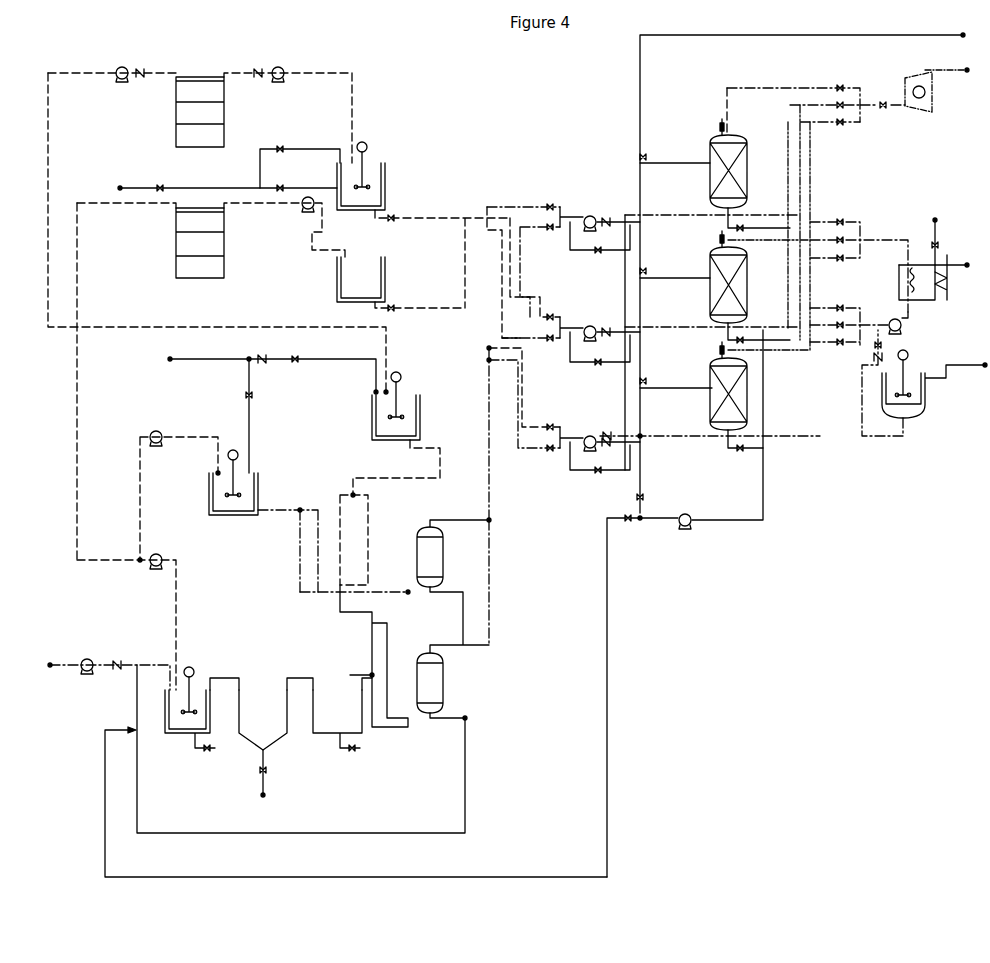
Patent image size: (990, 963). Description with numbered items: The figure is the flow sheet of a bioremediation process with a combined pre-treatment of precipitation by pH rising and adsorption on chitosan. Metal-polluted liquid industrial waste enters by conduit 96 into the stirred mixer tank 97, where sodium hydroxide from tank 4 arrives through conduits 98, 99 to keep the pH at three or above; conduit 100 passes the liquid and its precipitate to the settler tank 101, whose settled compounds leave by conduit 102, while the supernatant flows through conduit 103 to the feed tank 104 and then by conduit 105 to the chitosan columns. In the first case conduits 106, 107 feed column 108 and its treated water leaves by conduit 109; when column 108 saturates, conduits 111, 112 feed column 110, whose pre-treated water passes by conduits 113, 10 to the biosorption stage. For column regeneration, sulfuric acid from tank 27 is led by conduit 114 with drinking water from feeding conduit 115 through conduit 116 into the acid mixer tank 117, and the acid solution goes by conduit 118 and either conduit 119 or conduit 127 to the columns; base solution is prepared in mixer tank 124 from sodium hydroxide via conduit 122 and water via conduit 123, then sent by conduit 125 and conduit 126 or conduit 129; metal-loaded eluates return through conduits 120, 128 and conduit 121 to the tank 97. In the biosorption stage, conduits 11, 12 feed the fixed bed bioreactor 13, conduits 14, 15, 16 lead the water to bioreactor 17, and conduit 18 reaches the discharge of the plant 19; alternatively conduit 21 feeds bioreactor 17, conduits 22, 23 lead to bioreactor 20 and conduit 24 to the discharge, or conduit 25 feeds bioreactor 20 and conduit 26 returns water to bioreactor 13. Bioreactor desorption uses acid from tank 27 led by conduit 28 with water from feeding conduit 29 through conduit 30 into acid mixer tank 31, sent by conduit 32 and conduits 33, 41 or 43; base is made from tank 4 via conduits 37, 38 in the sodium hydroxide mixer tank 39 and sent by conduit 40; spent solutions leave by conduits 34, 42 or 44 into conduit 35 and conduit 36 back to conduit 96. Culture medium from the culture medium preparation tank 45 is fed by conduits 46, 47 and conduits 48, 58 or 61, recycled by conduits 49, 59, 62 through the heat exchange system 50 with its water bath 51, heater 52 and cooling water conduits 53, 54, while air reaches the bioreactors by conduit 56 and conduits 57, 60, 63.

The tank 4 is at (224, 256).
The conduit 10 is at (489, 488).
The conduit 11 is at (530, 230).
The conduit 12 is at (712, 215).
The fixed bed bioreactor 13 is at (712, 180).
The conduit 14 is at (690, 163).
The conduit 15 is at (568, 360).
The conduit 16 is at (712, 327).
The fixed bed bioreactor 17 is at (712, 292).
The conduit 18 is at (690, 278).
The discharge of the plant 19 is at (948, 35).
The fixed bed bioreactor 20 is at (712, 402).
The conduit 21 is at (540, 340).
The conduit 22 is at (570, 460).
The conduit 23 is at (712, 436).
The conduit 24 is at (690, 388).
The conduit 25 is at (540, 450).
The conduit 26 is at (572, 244).
The tank 27 is at (224, 124).
The conduit 28 is at (322, 73).
The feeding conduit 29 is at (132, 188).
The conduit 30 is at (314, 149).
The acid mixer tank 31 is at (385, 180).
The conduit 32 is at (465, 218).
The conduit 33 is at (522, 207).
The conduit 34 is at (750, 228).
The conduit 35 is at (763, 452).
The conduit 36 is at (312, 877).
The conduit 37 is at (270, 203).
The conduit 38 is at (352, 232).
The sodium hydroxide mixer tank 39 is at (385, 270).
The conduit 40 is at (445, 308).
The conduit 41 is at (538, 300).
The conduit 42 is at (756, 340).
The conduit 43 is at (494, 300).
The conduit 44 is at (750, 448).
The culture medium preparation tank 45 is at (882, 402).
The conduit 46 is at (862, 436).
The conduit 47 is at (870, 240).
The conduit 48 is at (810, 178).
The conduit 49 is at (780, 215).
The heat exchange system 50 is at (899, 292).
The water bath 51 is at (910, 312).
The heater 52 is at (955, 282).
The conduit 53 is at (935, 230).
The conduit 54 is at (955, 265).
The conduit 56 is at (883, 105).
The conduit 57 is at (766, 88).
The conduit 58 is at (780, 240).
The conduit 59 is at (780, 270).
The conduit 60 is at (790, 105).
The conduit 61 is at (783, 352).
The conduit 62 is at (785, 436).
The conduit 63 is at (845, 122).
The conduit 96 is at (58, 668).
The stirred mixer tank 97 is at (192, 733).
The conduit 98 is at (144, 203).
The conduit 99 is at (176, 578).
The conduit 100 is at (225, 678).
The settler tank 101 is at (242, 737).
The conduit 102 is at (263, 782).
The conduit 103 is at (305, 678).
The feed tank 104 is at (336, 733).
The conduit 105 is at (362, 678).
The conduit 106 is at (372, 665).
The conduit 107 is at (412, 593).
The column 108 is at (417, 560).
The conduit 109 is at (450, 522).
The column 110 is at (417, 680).
The conduit 111 is at (390, 728).
The conduit 112 is at (418, 718).
The conduit 113 is at (465, 650).
The conduit 114 is at (148, 327).
The feeding conduit 115 is at (200, 359).
The conduit 116 is at (318, 359).
The acid mixer tank 117 is at (420, 417).
The conduit 118 is at (440, 455).
The conduit 119 is at (368, 535).
The conduit 120 is at (452, 594).
The conduit 121 is at (456, 833).
The conduit 122 is at (140, 495).
The conduit 123 is at (249, 425).
The mixer tank 124 is at (258, 492).
The conduit 125 is at (275, 510).
The conduit 126 is at (318, 594).
The conduit 127 is at (340, 508).
The conduit 128 is at (465, 728).
The conduit 129 is at (300, 590).